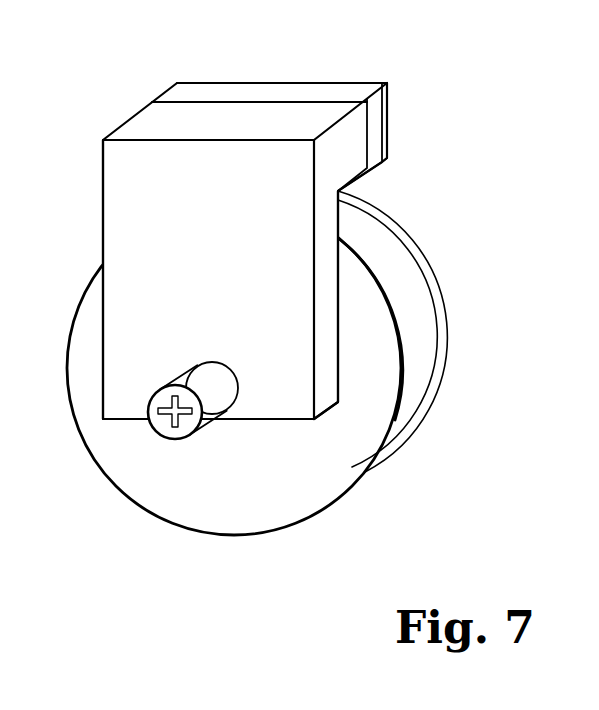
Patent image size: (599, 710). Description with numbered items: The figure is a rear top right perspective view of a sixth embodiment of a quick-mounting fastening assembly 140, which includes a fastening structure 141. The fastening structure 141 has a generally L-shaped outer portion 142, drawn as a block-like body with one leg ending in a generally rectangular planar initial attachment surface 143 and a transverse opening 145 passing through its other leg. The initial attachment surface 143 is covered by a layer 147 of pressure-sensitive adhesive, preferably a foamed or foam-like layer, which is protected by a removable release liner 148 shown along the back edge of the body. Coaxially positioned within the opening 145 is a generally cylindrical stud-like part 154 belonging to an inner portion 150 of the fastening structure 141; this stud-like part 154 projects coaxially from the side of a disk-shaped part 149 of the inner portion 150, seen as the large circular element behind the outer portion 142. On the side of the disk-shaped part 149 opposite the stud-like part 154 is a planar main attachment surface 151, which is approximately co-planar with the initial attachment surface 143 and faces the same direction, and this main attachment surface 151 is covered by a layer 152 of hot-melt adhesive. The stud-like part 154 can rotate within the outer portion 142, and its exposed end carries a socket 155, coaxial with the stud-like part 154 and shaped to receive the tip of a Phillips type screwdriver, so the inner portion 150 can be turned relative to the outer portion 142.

The quick-mounting fastening assembly 140 is at (444, 209).
The fastening structure 141 is at (91, 212).
The L-shaped outer portion 142 is at (219, 239).
The initial attachment surface 143 is at (368, 133).
The transverse opening 145 is at (207, 368).
The layer of pressure-sensitive adhesive 147 is at (340, 96).
The release liner 148 is at (387, 108).
The disk-shaped part 149 is at (387, 362).
The inner portion 150 is at (376, 438).
The main attachment surface 151 is at (418, 260).
The layer of hot-melt adhesive 152 is at (443, 315).
The stud-like part 154 is at (160, 425).
The socket 155 is at (182, 425).